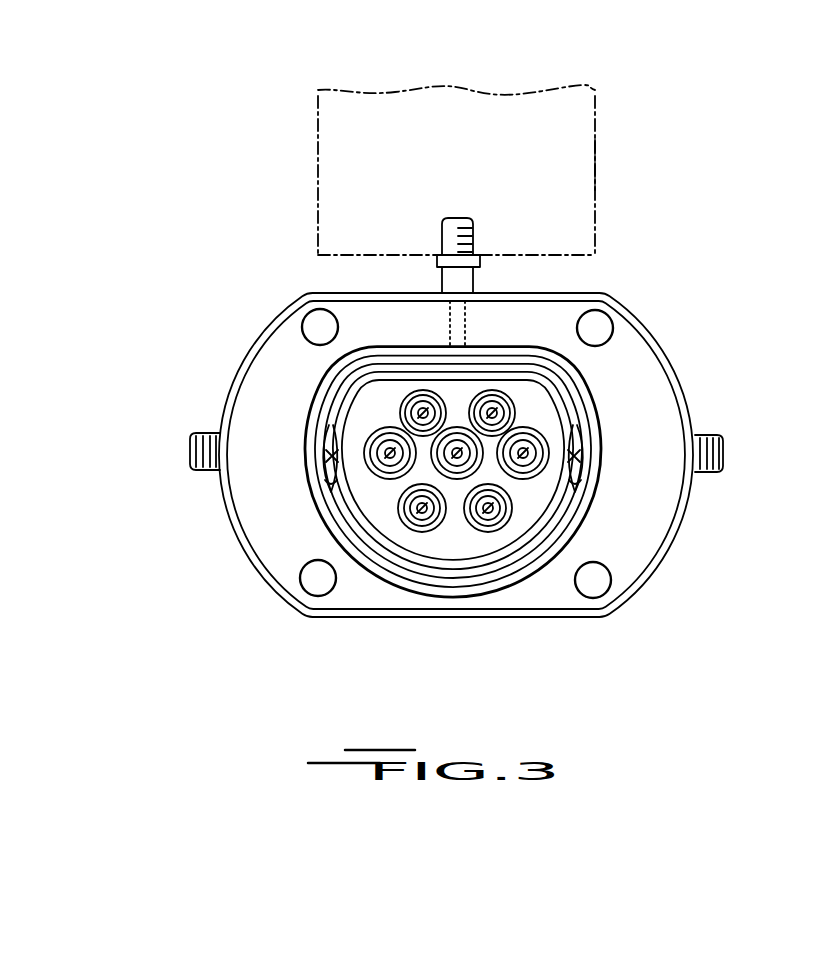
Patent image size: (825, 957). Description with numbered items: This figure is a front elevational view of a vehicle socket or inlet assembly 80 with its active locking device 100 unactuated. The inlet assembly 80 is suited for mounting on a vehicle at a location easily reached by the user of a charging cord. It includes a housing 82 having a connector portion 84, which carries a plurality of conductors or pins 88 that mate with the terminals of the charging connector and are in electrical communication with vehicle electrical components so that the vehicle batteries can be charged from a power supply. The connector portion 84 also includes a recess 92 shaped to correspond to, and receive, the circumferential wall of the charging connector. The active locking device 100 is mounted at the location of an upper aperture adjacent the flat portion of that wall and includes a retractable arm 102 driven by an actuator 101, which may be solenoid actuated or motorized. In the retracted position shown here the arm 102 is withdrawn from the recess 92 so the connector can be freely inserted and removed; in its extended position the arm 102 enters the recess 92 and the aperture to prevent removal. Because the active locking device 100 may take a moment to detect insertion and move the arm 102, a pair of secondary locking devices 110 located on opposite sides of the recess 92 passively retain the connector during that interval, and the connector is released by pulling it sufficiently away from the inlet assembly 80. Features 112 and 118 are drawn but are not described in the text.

The inlet assembly 80 is at (615, 118).
The housing 82 is at (258, 412).
The connector portion 84 is at (323, 517).
The pins 88 is at (523, 478).
The recess 92 is at (388, 552).
The active locking device 100 is at (598, 163).
The actuator 101 is at (351, 100).
The retractable arm 102 is at (478, 325).
The secondary locking devices 110 is at (203, 435).
The latch features 112 is at (335, 430).
The latch detail 118 is at (317, 503).